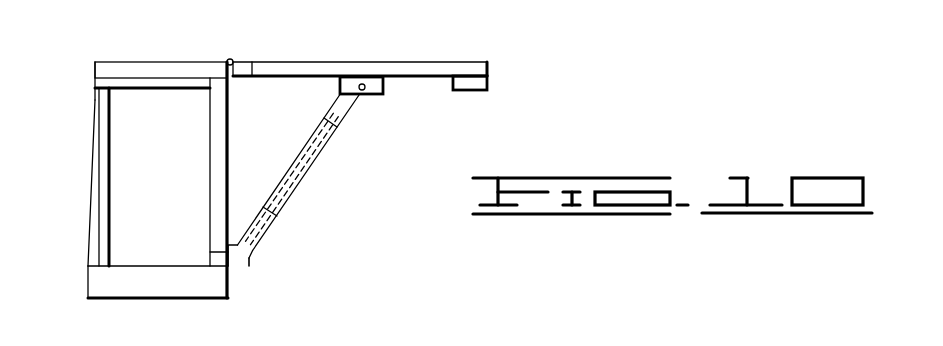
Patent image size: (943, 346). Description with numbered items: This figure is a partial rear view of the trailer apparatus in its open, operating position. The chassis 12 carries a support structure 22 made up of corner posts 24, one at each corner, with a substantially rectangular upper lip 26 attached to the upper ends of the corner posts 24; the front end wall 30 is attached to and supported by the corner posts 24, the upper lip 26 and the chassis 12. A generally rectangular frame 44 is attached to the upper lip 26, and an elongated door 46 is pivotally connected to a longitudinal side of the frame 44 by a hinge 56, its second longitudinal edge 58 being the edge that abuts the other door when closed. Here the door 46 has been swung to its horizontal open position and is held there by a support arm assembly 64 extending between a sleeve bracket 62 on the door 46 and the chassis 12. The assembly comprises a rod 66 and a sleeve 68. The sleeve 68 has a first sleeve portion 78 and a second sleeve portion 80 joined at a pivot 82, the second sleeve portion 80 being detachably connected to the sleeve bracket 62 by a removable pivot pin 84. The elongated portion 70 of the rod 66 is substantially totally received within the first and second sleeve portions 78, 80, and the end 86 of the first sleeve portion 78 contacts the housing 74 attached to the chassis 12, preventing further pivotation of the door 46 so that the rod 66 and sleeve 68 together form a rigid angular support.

The chassis 12 is at (110, 280).
The support structure 22 is at (160, 93).
The corner posts 24 is at (218, 113).
The upper lip 26 is at (88, 164).
The front end wall 30 is at (170, 214).
The frame 44 is at (130, 70).
The door 46 is at (382, 65).
The hinge 56 is at (229, 58).
The second longitudinal edge 58 is at (489, 66).
The sleeve bracket 62 is at (375, 97).
The support arm assembly 64 is at (333, 146).
The rod 66 is at (270, 226).
The sleeve 68 is at (330, 118).
The elongated portion 70 is at (328, 184).
The housing 74 is at (240, 255).
The first sleeve portion 78 is at (258, 237).
The second sleeve portion 80 is at (287, 106).
The pivot 82 is at (275, 207).
The removable pivot pin 84 is at (362, 84).
The end 86 is at (228, 252).